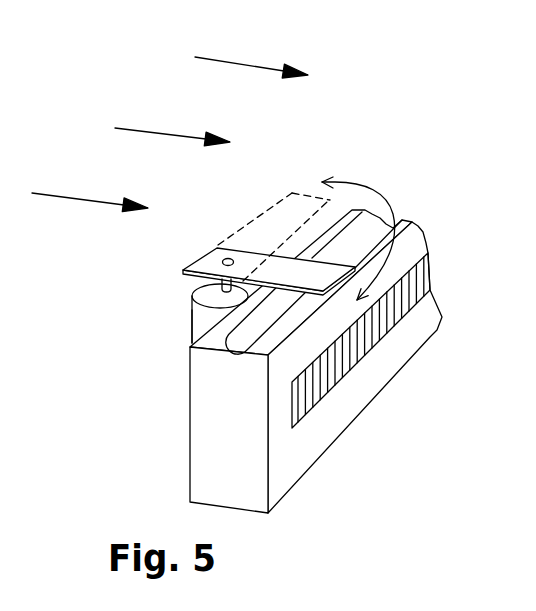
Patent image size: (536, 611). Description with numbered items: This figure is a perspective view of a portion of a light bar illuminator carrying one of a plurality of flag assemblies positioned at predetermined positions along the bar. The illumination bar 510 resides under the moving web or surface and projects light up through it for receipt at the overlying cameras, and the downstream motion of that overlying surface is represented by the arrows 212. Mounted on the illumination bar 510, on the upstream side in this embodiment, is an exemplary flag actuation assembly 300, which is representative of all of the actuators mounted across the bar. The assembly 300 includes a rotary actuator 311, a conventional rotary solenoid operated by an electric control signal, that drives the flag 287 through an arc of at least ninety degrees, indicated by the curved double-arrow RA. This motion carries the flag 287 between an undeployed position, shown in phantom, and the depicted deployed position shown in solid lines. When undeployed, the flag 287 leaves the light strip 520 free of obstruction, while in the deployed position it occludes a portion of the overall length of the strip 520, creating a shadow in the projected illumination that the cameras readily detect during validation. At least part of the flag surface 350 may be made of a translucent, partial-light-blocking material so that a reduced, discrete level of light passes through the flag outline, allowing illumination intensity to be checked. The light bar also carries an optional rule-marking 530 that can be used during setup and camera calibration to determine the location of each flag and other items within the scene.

The arrows 212 is at (170, 106).
The flag 287 is at (333, 143).
The curved double-arrow RA is at (397, 200).
The flag actuation assembly 300 is at (141, 313).
The rotary actuator 311 is at (120, 334).
The light strip 520 is at (188, 338).
The illumination bar 510 is at (254, 361).
The rule-marking 530 is at (361, 373).
The flag surface 350 is at (295, 420).